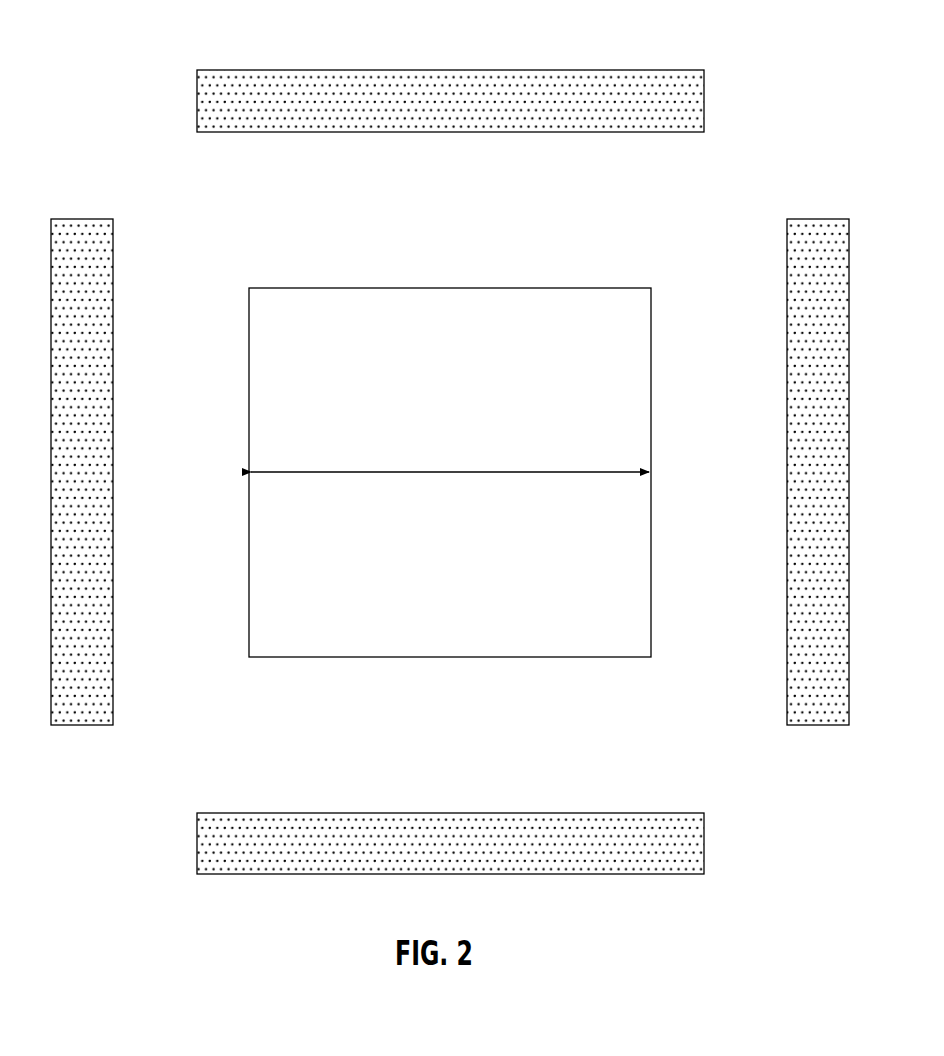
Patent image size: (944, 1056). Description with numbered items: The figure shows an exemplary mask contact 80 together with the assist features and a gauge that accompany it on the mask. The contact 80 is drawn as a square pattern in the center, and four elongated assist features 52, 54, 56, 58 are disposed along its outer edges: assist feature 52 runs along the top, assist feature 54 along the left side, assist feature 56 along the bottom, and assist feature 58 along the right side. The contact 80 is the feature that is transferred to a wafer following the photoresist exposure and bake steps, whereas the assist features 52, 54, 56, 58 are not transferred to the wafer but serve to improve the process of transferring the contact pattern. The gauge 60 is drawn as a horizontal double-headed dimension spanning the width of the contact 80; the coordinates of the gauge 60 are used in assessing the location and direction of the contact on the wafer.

The assist feature 52 is at (250, 70).
The assist feature 54 is at (78, 219).
The assist feature 56 is at (270, 813).
The assist feature 58 is at (818, 219).
The mask contact 80 is at (307, 288).
The gauge 60 is at (450, 472).